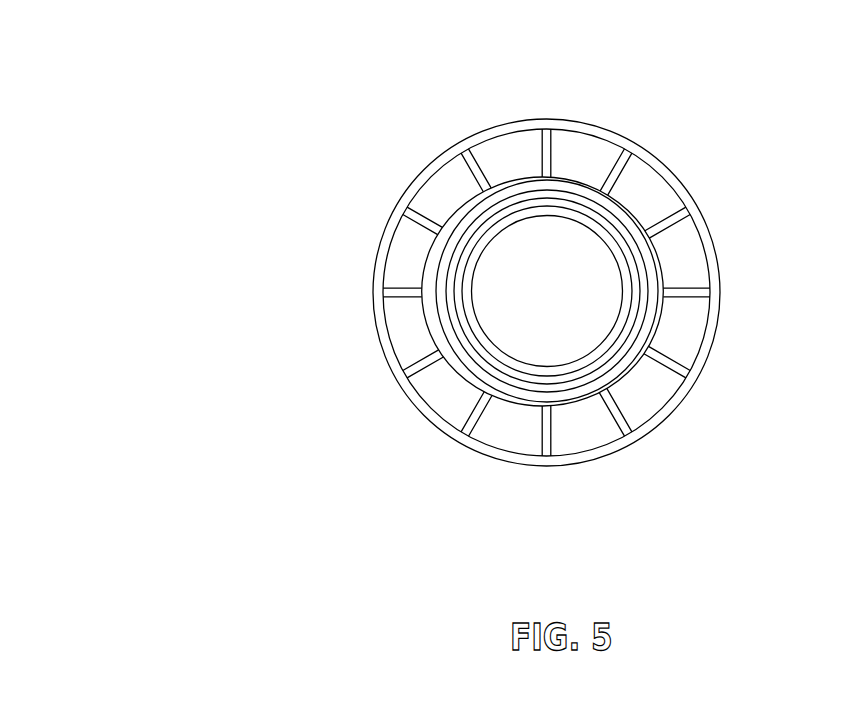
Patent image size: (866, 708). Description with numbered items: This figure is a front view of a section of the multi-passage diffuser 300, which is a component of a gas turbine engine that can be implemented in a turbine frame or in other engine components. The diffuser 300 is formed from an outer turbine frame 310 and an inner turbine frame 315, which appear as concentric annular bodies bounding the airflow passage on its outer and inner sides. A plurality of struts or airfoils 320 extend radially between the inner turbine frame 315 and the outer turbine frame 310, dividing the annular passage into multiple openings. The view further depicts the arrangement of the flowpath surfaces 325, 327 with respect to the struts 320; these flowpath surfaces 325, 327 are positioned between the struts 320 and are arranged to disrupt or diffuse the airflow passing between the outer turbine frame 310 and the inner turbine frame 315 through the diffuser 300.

The multi-passage diffuser 300 is at (121, 175).
The outer turbine frame 310 is at (713, 231).
The inner turbine frame 315 is at (461, 304).
The struts or airfoils 320 is at (481, 165).
The flowpath surface 325 is at (572, 178).
The flowpath surface 327 is at (598, 155).